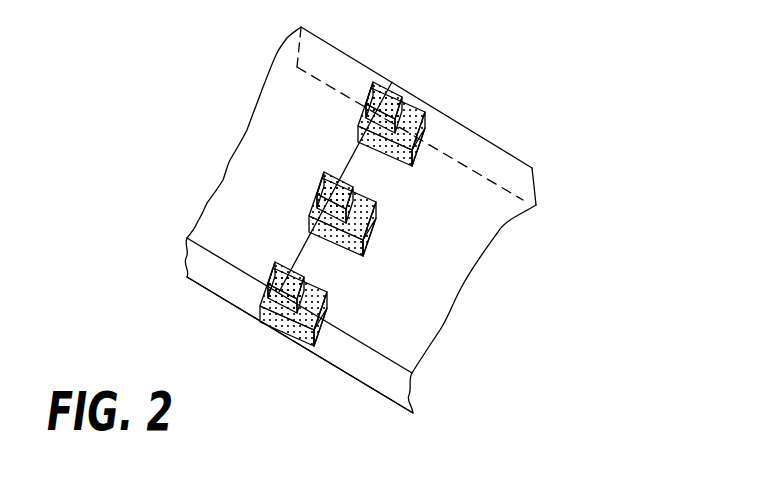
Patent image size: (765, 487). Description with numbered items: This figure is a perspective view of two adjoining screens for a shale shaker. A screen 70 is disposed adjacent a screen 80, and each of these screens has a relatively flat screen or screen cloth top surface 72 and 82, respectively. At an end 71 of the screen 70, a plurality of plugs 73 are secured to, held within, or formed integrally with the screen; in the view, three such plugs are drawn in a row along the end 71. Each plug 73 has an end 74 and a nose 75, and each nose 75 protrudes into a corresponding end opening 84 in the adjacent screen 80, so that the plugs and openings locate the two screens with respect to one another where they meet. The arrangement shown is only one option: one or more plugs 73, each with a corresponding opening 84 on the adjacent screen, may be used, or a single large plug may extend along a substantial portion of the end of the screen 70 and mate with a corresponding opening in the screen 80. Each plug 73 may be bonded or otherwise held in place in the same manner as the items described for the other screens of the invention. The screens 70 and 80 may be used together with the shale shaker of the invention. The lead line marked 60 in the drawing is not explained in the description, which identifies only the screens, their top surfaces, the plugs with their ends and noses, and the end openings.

The substrate 60 is at (354, 228).
The screen 70 is at (208, 283).
The end 71 is at (366, 378).
The screen cloth top surface 72 is at (203, 222).
The plug 73 is at (403, 92).
The end 74 is at (364, 92).
The nose 75 is at (427, 132).
The screen 80 is at (535, 187).
The screen cloth top surface 82 is at (423, 322).
The end opening 84 is at (428, 117).